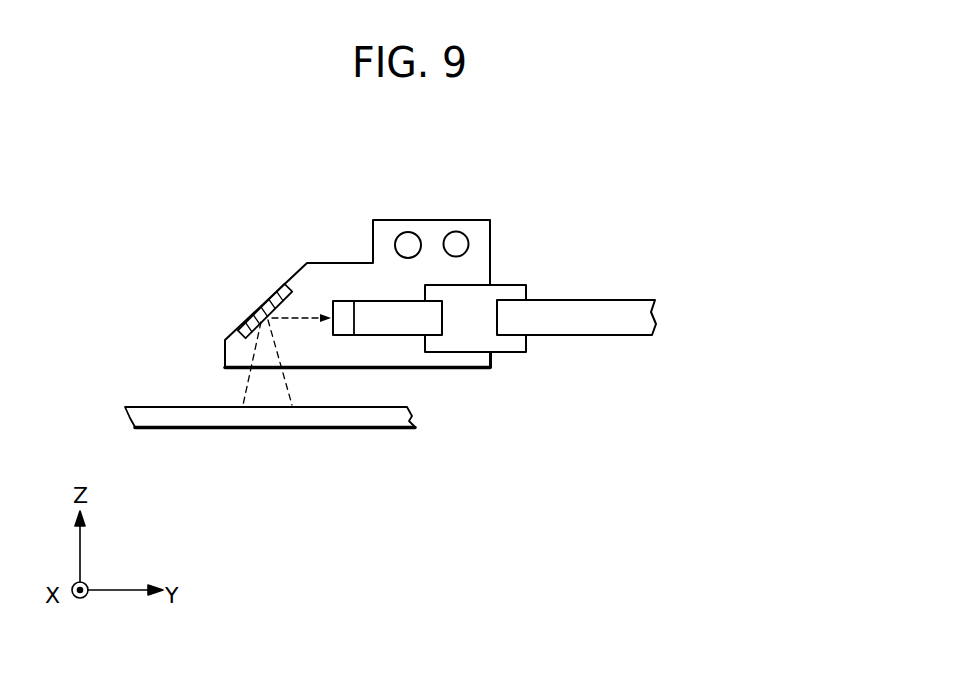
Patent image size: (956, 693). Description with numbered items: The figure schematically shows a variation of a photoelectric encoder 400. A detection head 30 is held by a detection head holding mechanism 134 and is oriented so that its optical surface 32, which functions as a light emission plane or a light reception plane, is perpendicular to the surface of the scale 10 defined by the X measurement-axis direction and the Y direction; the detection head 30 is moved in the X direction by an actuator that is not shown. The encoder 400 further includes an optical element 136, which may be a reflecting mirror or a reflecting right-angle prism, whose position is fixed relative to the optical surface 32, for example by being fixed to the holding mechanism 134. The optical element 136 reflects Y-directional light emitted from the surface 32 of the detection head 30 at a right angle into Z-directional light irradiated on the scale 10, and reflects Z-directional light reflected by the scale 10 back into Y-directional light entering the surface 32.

The scale 10 is at (167, 412).
The detection head 30 is at (368, 310).
The optical surface 32 is at (331, 313).
The detection head holding mechanism 134 is at (423, 226).
The optical element 136 is at (254, 314).
The photoelectric encoder 400 is at (552, 202).